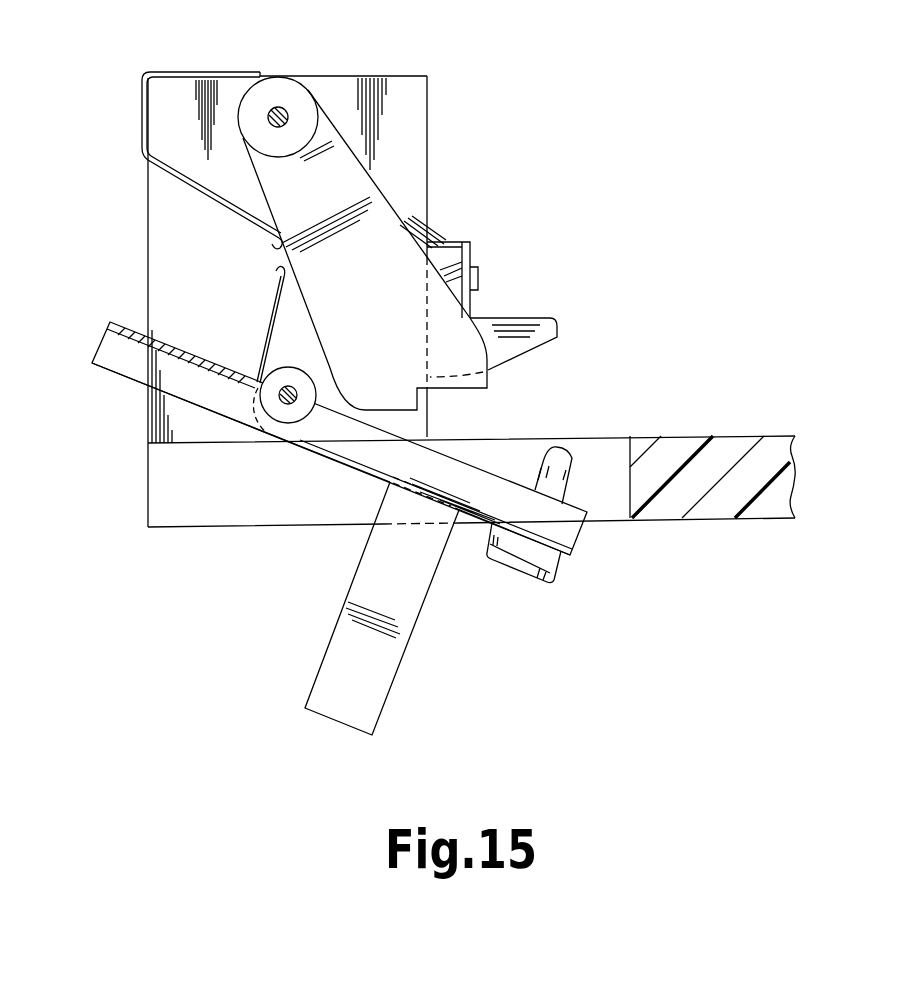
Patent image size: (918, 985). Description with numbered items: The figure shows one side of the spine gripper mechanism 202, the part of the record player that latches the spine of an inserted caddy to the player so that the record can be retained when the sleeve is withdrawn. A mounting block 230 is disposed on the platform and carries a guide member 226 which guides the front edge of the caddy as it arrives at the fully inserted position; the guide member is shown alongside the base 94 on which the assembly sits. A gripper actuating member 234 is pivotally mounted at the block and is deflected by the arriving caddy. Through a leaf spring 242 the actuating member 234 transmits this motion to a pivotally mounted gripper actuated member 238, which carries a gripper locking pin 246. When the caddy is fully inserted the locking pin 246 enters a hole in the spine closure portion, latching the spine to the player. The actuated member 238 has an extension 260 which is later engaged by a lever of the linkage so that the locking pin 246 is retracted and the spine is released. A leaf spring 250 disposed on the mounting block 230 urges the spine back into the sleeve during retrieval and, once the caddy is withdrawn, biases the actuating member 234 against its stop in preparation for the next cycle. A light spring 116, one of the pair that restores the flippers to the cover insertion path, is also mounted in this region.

The spine gripper mechanism 202 is at (569, 34).
The base plate 94 is at (687, 448).
The mounting block 230 is at (418, 130).
The leaf spring 250 is at (195, 188).
The gripper actuating member 234 is at (372, 215).
The light spring 116 is at (468, 248).
The guide member 226 is at (557, 321).
The leaf spring 242 is at (272, 318).
The gripper actuated member 238 is at (470, 472).
The gripper locking pin 246 is at (565, 456).
The extension 260 is at (330, 665).